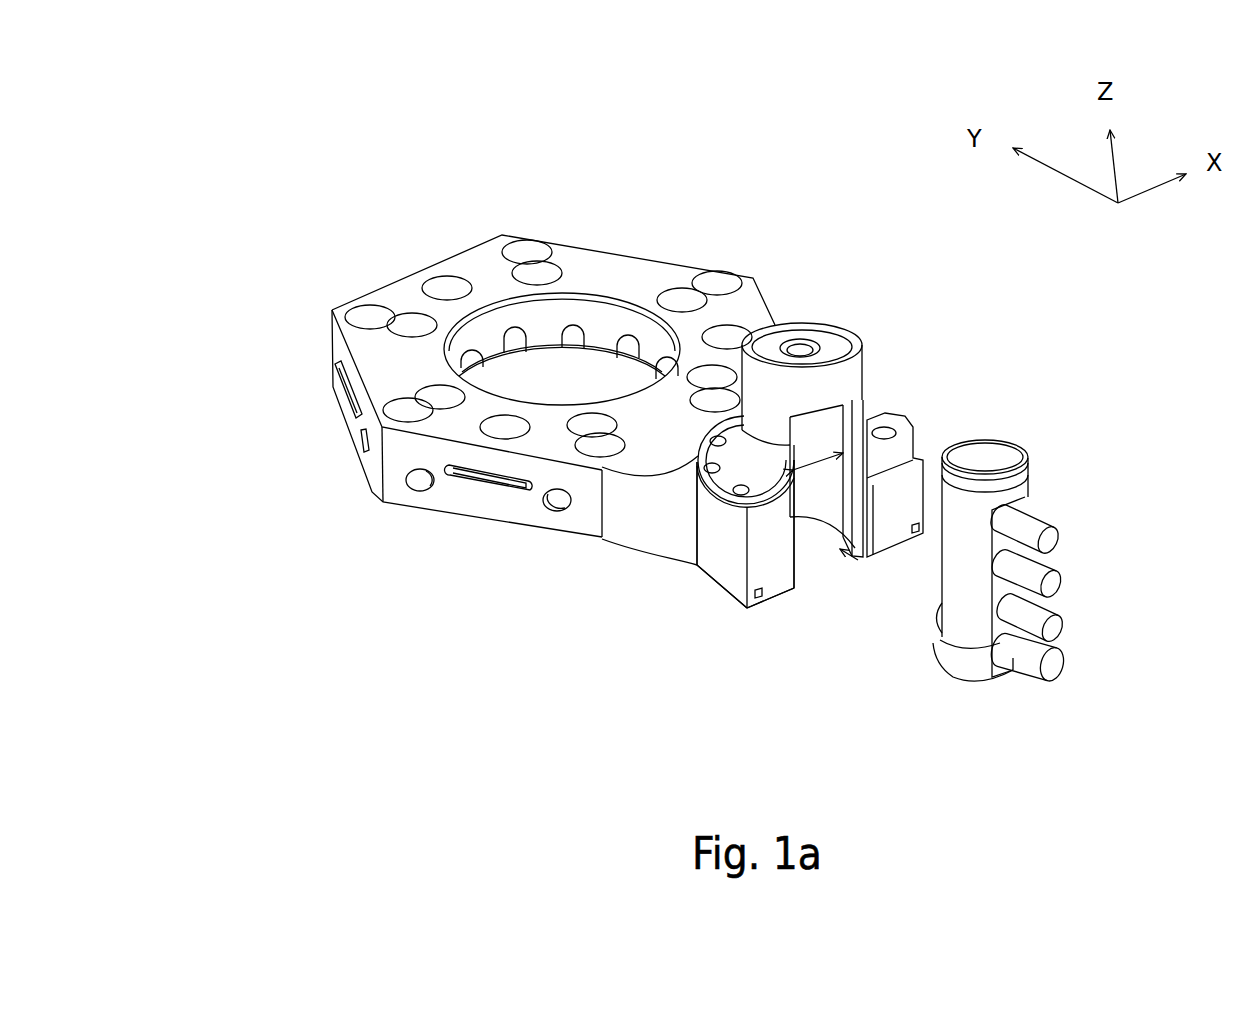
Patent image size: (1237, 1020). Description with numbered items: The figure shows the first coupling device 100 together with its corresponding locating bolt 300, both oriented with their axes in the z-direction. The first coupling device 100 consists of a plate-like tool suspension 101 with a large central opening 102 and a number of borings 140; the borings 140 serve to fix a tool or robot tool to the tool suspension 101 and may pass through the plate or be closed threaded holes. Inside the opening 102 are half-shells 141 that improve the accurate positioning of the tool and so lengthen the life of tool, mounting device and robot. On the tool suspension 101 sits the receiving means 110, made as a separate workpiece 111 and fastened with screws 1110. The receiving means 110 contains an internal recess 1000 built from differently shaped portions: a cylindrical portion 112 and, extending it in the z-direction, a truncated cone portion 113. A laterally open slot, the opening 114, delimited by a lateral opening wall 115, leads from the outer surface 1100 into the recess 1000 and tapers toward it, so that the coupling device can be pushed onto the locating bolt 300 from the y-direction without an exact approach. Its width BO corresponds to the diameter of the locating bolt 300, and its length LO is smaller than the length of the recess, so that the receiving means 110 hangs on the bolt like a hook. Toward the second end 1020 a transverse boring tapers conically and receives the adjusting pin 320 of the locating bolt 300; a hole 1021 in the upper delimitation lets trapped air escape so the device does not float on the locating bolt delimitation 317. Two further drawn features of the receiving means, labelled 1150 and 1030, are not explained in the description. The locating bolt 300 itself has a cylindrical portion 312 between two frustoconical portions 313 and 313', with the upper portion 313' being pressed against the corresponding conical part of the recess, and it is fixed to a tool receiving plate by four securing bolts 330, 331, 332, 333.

The first coupling device 100 is at (340, 232).
The tool suspension 101 is at (343, 423).
The opening 102 is at (556, 373).
The borings 140 is at (523, 240).
The half-shells 141 is at (636, 333).
The receiving means 110 is at (866, 362).
The second end 1020 is at (806, 350).
The hole 1021 is at (793, 337).
The lateral opening wall 115 is at (863, 422).
The outer surface 1100 is at (742, 458).
The screws 1110 is at (720, 513).
The separate workpiece 111 is at (697, 467).
The bracket bottom edge 1150 is at (746, 610).
The bracket bottom right edge 1030 is at (777, 612).
The opening 114 is at (805, 592).
The truncated cone portion 113 is at (833, 530).
The cylindrical portion 112 is at (818, 530).
The recess 1000 is at (840, 553).
The width of the opening BO is at (818, 446).
The length of the opening LO is at (866, 571).
The locating bolt 300 is at (1026, 748).
The locating bolt delimitation 317 is at (985, 450).
The frustoconical portion 313' is at (1024, 450).
The cylindrical portion 312 is at (1022, 487).
The securing bolt 333 is at (1052, 542).
The securing bolt 332 is at (1057, 582).
The securing bolt 331 is at (1057, 625).
The securing bolt 330 is at (1050, 667).
The frustoconical portion 313 is at (973, 688).
The adjusting pin 320 is at (940, 608).